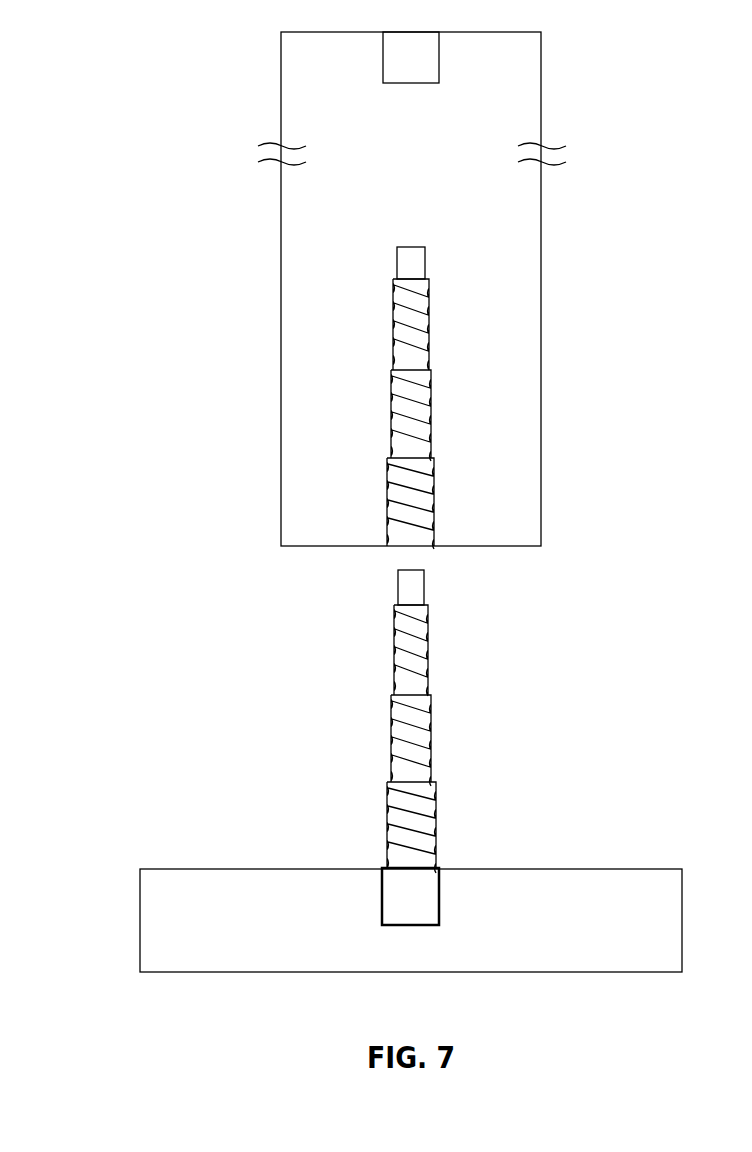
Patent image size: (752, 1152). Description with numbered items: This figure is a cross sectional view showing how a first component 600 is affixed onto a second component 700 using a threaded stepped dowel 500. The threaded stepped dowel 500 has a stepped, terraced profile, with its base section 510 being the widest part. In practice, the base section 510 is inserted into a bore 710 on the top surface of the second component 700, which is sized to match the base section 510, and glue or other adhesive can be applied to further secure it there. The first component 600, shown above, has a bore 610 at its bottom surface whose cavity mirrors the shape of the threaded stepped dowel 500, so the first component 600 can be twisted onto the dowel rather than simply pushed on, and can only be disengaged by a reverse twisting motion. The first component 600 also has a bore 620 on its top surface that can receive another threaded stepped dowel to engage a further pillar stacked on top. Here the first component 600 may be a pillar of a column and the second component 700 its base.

The threaded stepped dowel 500 is at (336, 729).
The base section 510 is at (418, 890).
The first component 600 is at (200, 228).
The bore 610 is at (417, 510).
The bore 620 is at (382, 56).
The second component 700 is at (165, 846).
The bore 710 is at (382, 905).